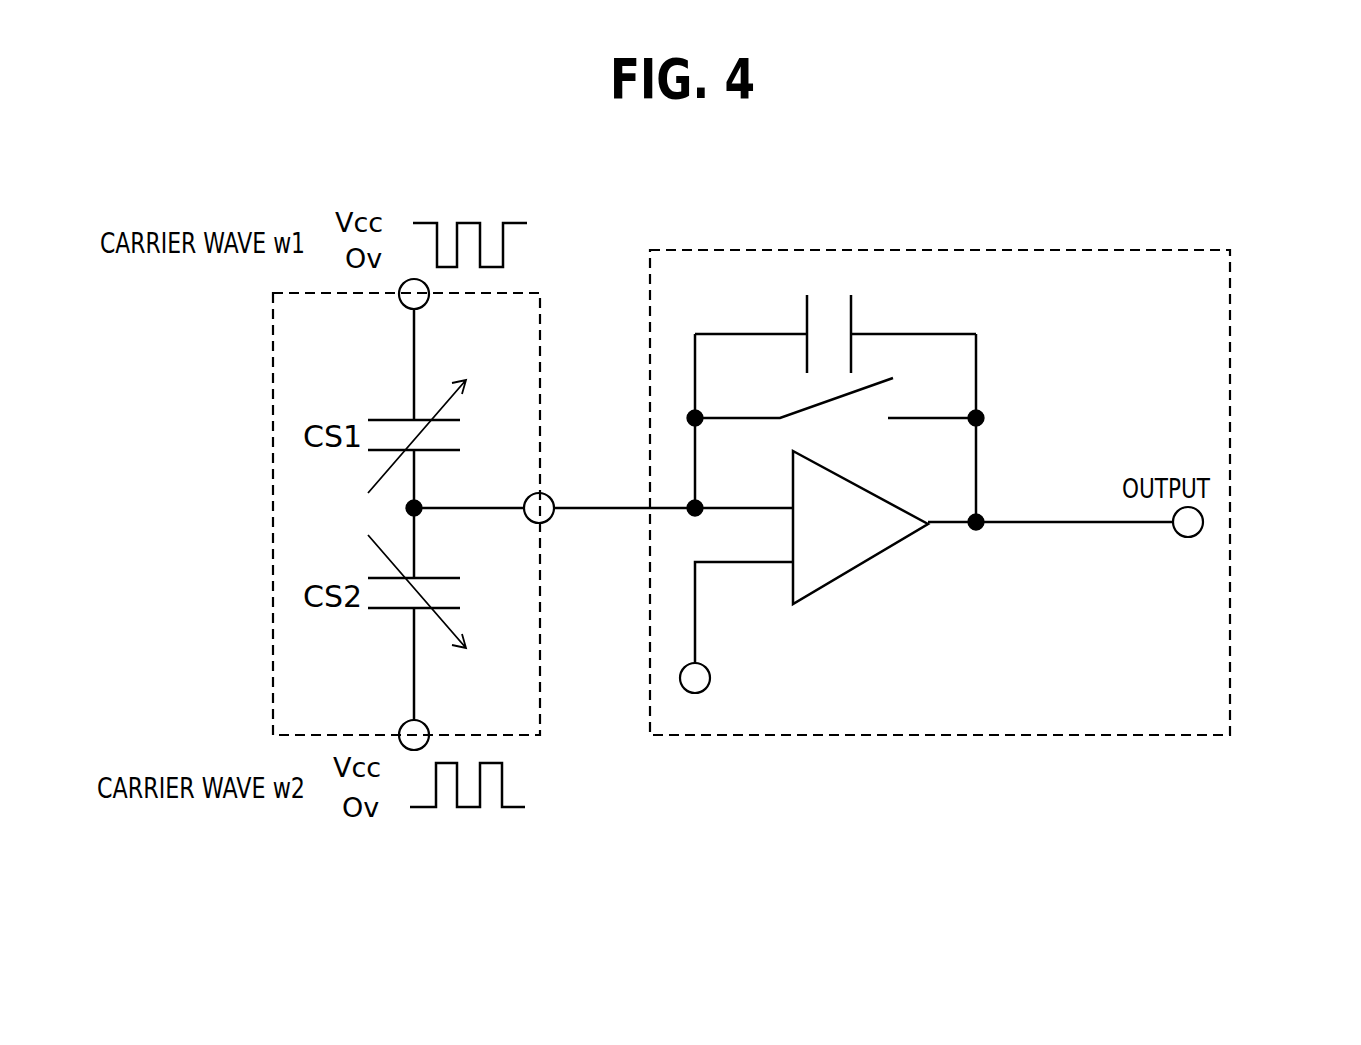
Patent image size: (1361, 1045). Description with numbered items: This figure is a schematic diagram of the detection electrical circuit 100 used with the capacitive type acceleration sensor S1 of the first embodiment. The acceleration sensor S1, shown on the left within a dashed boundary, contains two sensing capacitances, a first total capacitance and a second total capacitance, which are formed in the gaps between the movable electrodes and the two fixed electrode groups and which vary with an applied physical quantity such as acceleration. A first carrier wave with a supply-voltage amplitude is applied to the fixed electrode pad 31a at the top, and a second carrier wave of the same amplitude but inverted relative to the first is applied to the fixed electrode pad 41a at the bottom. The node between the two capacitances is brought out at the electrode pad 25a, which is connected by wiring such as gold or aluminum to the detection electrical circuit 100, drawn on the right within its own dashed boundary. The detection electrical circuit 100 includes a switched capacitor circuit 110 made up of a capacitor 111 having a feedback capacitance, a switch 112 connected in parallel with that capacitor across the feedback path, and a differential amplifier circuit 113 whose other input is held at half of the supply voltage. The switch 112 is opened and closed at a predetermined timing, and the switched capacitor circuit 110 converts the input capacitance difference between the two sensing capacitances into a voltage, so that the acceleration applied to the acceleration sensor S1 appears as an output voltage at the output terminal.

The acceleration sensor S1 is at (271, 362).
The fixed electrode pad 31a is at (423, 308).
The fixed electrode pad 41a is at (405, 727).
The electrode pad 25a is at (550, 519).
The detection electrical circuit 100 is at (1233, 292).
The switched capacitor circuit 110 is at (926, 483).
The capacitor 111 is at (827, 293).
The switch 112 is at (877, 377).
The differential amplifier circuit 113 is at (843, 580).